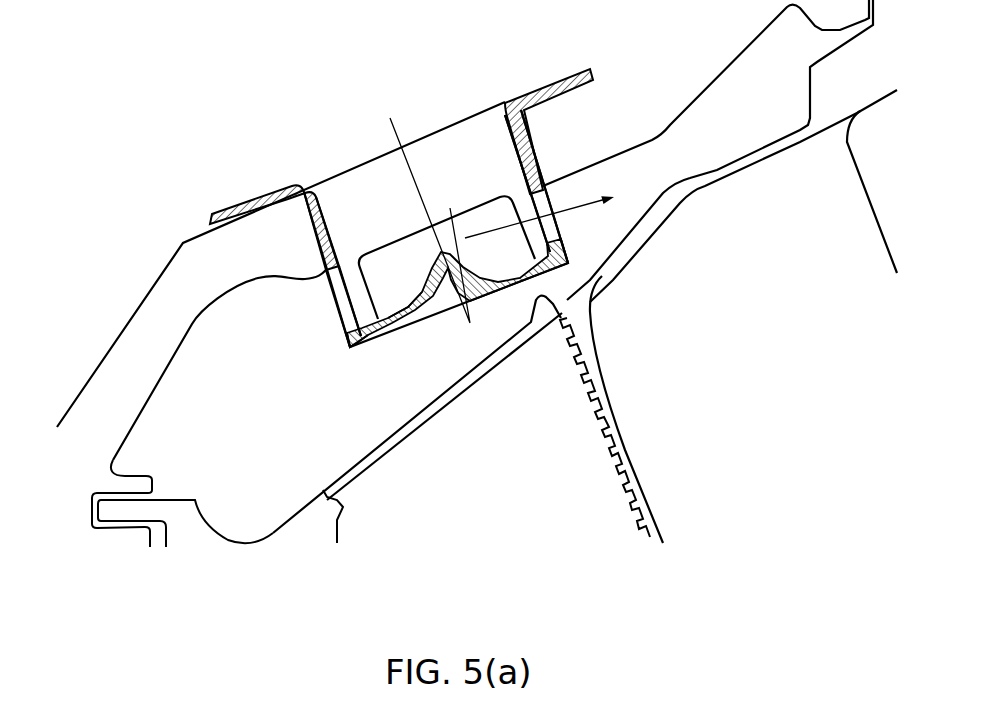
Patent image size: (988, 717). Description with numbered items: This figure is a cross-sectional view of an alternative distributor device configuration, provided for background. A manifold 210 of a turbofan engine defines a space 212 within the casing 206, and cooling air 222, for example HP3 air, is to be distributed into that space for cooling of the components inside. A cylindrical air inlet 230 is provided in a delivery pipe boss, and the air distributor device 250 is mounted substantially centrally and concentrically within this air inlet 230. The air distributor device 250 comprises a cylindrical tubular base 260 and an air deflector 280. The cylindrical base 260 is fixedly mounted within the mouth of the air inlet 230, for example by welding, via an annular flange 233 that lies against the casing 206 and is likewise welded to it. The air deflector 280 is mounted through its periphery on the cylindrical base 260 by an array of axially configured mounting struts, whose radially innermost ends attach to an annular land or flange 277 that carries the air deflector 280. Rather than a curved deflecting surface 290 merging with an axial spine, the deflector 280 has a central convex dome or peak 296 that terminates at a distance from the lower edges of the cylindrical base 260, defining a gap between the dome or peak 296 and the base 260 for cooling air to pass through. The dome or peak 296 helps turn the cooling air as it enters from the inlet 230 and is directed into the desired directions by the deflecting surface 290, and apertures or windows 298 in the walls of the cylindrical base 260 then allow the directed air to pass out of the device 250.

The casing 206 is at (95, 368).
The manifold 210 is at (263, 242).
The space 212 is at (268, 442).
The cooling air 222 is at (430, 168).
The air inlet 230 is at (440, 250).
The annular flange 233 is at (545, 80).
The air distributor device 250 is at (324, 328).
The cylindrical tubular base 260 is at (535, 156).
The annular land or flange 277 is at (355, 352).
The air deflector 280 is at (428, 313).
The curved deflecting surface 290 is at (403, 313).
The convex dome or peak 296 is at (523, 281).
The apertures or windows 298 is at (552, 231).